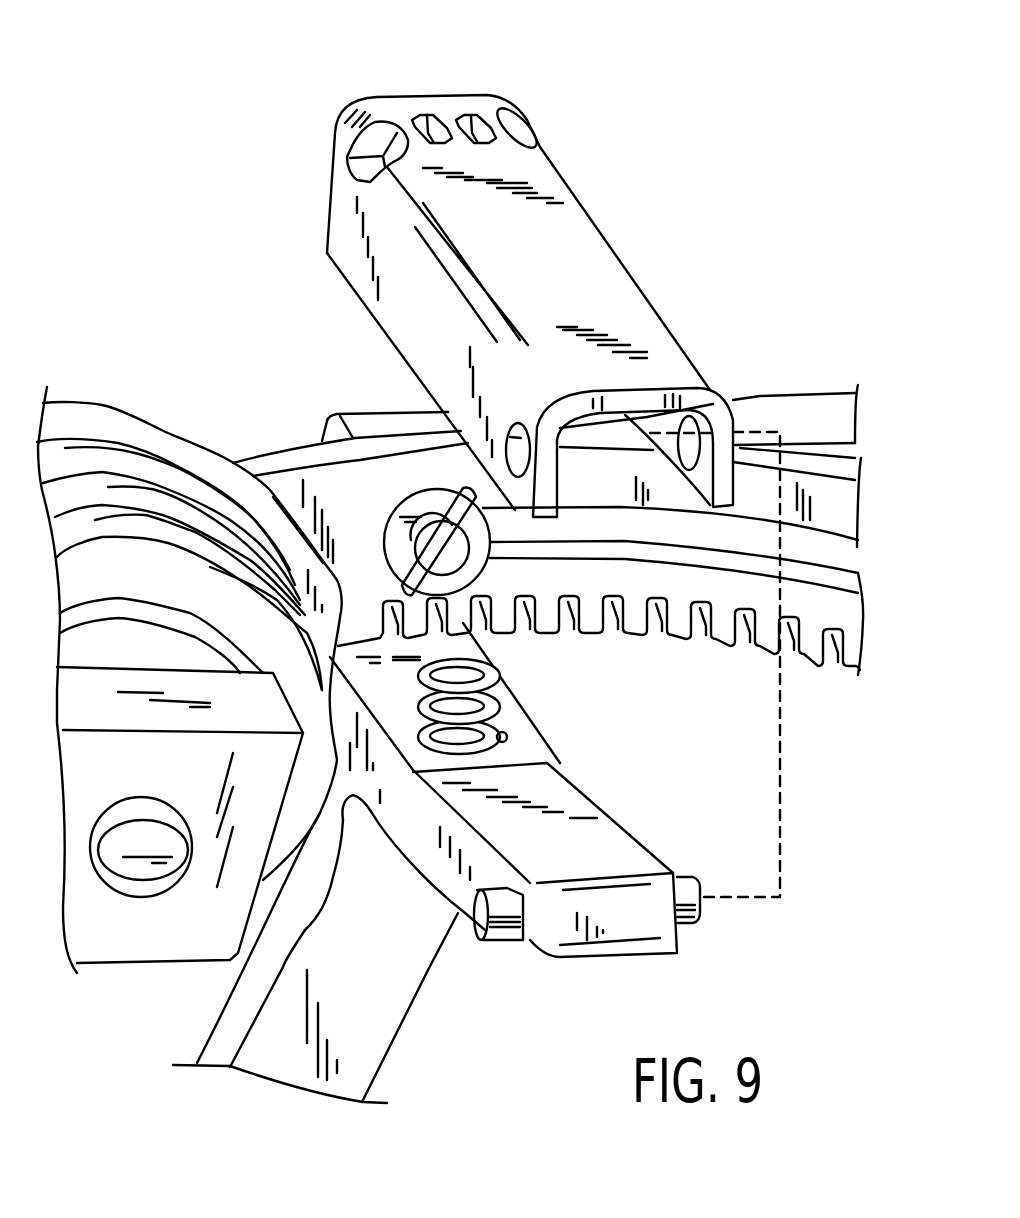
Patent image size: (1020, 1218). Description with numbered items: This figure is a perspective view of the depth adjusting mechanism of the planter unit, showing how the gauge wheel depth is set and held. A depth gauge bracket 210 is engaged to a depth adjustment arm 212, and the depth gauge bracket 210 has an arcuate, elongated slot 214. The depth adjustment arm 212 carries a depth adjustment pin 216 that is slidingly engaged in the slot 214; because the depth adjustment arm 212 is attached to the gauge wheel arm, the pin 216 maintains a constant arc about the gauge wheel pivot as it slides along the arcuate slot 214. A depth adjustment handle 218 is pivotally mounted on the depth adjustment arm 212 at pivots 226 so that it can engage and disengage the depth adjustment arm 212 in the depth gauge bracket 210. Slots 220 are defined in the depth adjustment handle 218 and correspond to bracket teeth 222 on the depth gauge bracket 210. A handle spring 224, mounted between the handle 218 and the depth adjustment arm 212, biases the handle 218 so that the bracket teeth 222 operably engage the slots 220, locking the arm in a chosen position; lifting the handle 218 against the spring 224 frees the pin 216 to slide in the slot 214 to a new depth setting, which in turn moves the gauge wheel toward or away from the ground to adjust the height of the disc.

The depth gauge bracket 210 is at (300, 455).
The depth adjustment arm 212 is at (385, 1003).
The arcuate, elongated slot 214 is at (800, 547).
The depth adjustment pin 216 is at (447, 555).
The depth adjustment handle 218 is at (600, 250).
The slots 220 is at (417, 117).
The bracket teeth 222 is at (500, 637).
The handle spring 224 is at (500, 723).
The pivots 226 is at (700, 913).